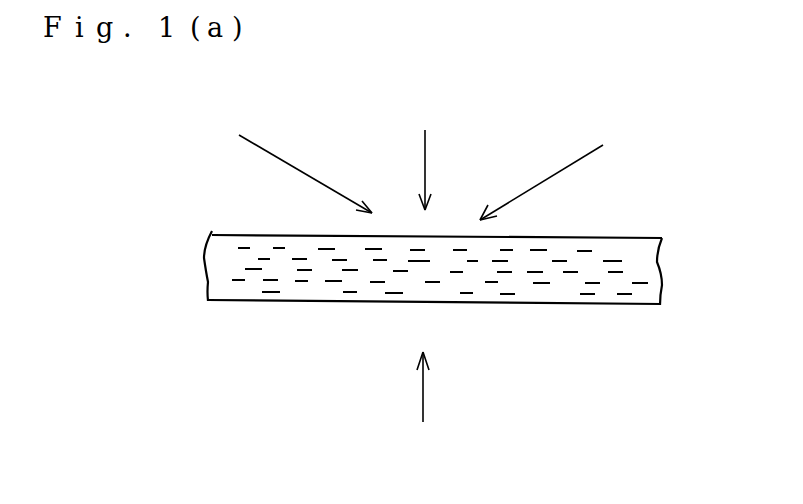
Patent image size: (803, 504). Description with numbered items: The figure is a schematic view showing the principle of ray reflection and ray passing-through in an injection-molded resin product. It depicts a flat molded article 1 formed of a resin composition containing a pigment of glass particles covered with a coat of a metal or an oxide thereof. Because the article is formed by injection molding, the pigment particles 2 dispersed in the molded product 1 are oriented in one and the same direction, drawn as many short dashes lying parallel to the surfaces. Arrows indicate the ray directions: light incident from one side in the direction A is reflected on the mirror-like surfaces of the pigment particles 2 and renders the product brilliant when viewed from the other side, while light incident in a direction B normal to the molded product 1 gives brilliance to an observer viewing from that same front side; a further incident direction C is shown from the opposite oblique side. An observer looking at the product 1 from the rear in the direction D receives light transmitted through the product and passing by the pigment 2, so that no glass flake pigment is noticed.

The molded article 1 is at (643, 265).
The pigment particles 2 is at (615, 252).
The incident light direction A is at (294, 156).
The incident light direction B is at (427, 148).
The incident light direction C is at (552, 160).
The viewing direction D is at (436, 389).